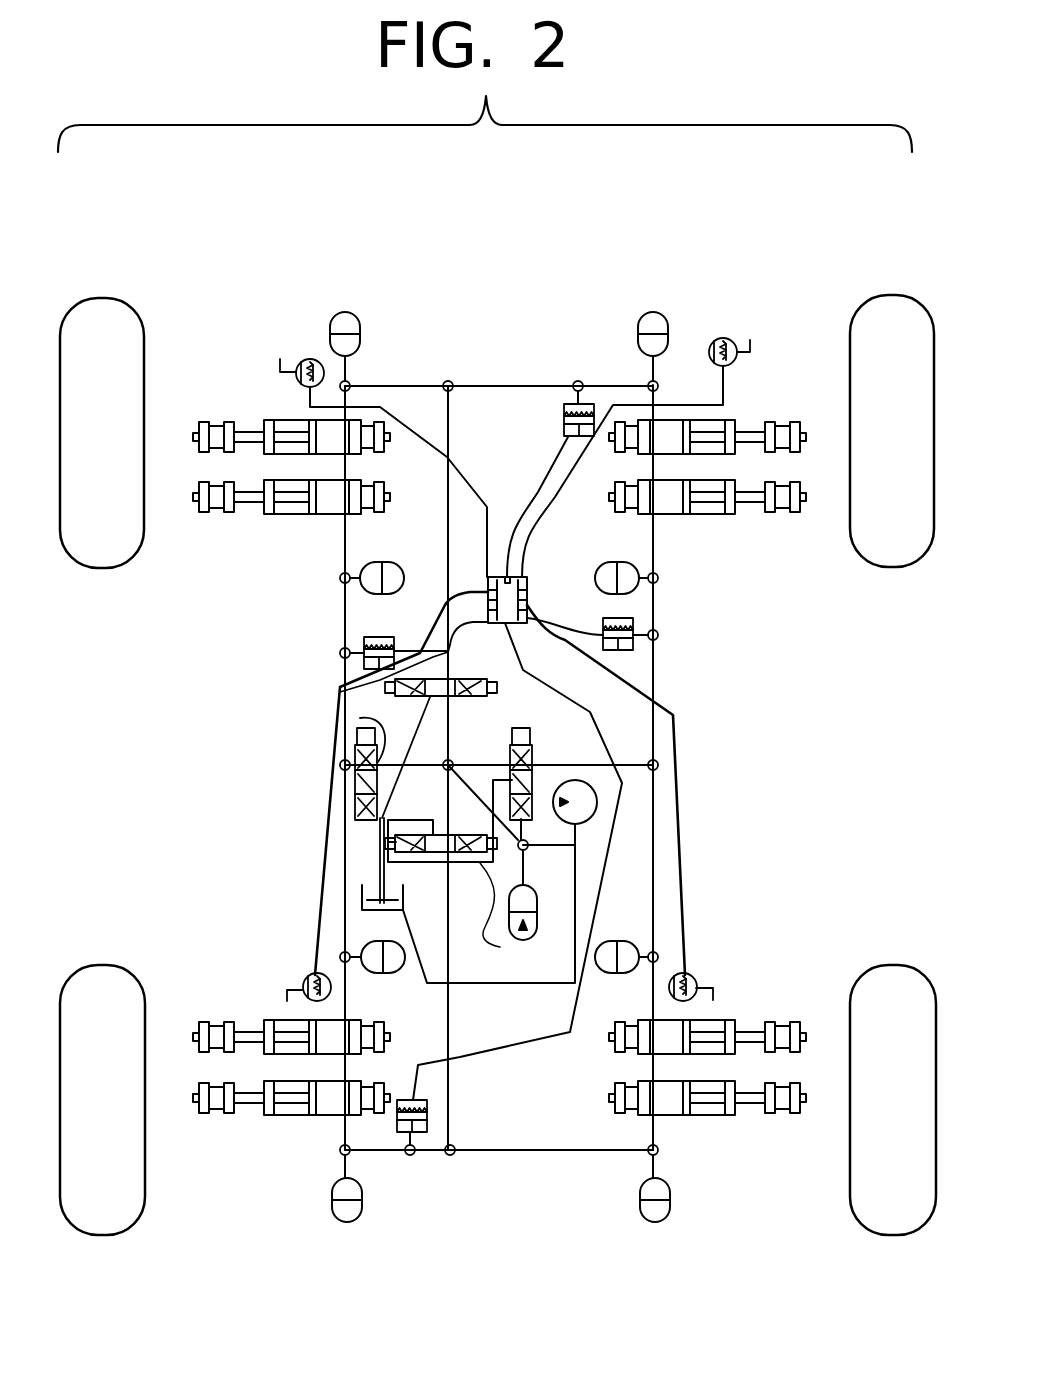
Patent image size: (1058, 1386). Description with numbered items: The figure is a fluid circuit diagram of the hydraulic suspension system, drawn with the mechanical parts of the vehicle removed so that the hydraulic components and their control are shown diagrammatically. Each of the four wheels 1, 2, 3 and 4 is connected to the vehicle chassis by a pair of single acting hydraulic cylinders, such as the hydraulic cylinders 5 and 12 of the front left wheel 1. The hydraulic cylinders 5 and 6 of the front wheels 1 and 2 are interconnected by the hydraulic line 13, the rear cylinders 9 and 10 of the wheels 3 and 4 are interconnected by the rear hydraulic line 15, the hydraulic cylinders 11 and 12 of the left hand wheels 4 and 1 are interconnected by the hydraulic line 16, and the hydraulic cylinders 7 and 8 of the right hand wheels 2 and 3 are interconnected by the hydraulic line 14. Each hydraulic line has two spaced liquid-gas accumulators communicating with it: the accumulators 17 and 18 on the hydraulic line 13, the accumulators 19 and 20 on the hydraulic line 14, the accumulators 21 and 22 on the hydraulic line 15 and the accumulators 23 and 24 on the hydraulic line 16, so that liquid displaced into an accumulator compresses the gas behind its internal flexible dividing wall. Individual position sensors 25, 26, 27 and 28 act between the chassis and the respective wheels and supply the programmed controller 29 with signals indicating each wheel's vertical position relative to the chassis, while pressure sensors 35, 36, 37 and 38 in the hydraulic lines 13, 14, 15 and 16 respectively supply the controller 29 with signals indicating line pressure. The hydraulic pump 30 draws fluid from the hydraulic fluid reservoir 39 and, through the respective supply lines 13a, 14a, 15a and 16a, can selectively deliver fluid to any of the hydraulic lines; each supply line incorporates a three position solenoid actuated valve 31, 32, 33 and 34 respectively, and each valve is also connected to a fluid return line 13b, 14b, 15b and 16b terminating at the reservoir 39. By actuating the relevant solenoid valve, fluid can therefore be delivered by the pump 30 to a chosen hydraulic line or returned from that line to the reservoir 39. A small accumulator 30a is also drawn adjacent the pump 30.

The front wheel 1 is at (104, 298).
The front wheel 2 is at (886, 296).
The rear wheel 3 is at (893, 1235).
The rear wheel 4 is at (105, 1235).
The hydraulic cylinder 5 is at (283, 420).
The hydraulic cylinder 6 is at (717, 418).
The hydraulic cylinder 7 is at (707, 514).
The hydraulic cylinder 8 is at (718, 1020).
The rear cylinder 9 is at (707, 1115).
The rear cylinder 10 is at (297, 1115).
The hydraulic cylinder 11 is at (273, 1020).
The hydraulic cylinder 12 is at (293, 514).
The hydraulic line 13 is at (513, 384).
The supply line 13a is at (449, 444).
The fluid return line 13b is at (413, 707).
The hydraulic line 14 is at (656, 840).
The supply line 14a is at (580, 762).
The fluid return line 14b is at (457, 983).
The rear hydraulic line 15 is at (555, 1150).
The supply line 15a is at (452, 1130).
The fluid return line 15b is at (433, 822).
The hydraulic line 16 is at (352, 822).
The supply line 16a is at (360, 718).
The fluid return line 16b is at (396, 842).
The hydraulic accumulator 17 is at (331, 318).
The hydraulic accumulator 18 is at (645, 306).
The hydraulic accumulator 19 is at (660, 562).
The hydraulic accumulator 20 is at (632, 943).
The hydraulic accumulator 21 is at (672, 1212).
The hydraulic accumulator 22 is at (357, 1222).
The hydraulic accumulator 23 is at (362, 943).
The hydraulic accumulator 24 is at (360, 592).
The position sensor 25 is at (307, 360).
The position sensor 26 is at (731, 340).
The position sensor 27 is at (697, 974).
The position sensor 28 is at (330, 984).
The programmed controller 29 is at (528, 607).
The hydraulic pump 30 is at (596, 792).
The pump accumulator 30a is at (540, 890).
The three position solenoid actuated valve 31 is at (350, 688).
The three position solenoid actuated valve 32 is at (531, 740).
The three position solenoid actuated valve 33 is at (455, 863).
The three position solenoid actuated valve 34 is at (355, 813).
The pressure sensor 35 is at (592, 403).
The pressure sensor 36 is at (632, 650).
The pressure sensor 37 is at (416, 1132).
The pressure sensor 38 is at (367, 667).
The hydraulic fluid reservoir 39 is at (362, 890).